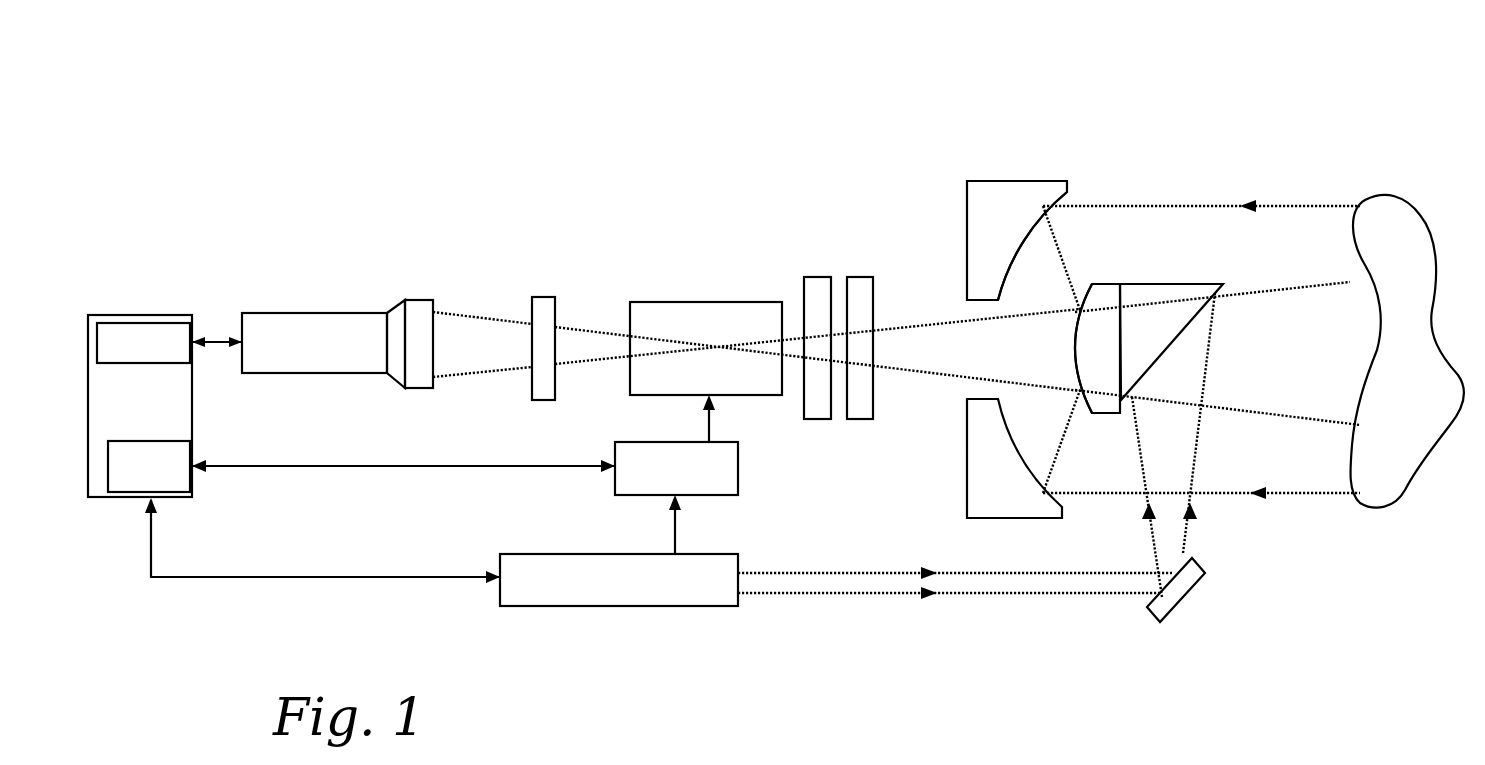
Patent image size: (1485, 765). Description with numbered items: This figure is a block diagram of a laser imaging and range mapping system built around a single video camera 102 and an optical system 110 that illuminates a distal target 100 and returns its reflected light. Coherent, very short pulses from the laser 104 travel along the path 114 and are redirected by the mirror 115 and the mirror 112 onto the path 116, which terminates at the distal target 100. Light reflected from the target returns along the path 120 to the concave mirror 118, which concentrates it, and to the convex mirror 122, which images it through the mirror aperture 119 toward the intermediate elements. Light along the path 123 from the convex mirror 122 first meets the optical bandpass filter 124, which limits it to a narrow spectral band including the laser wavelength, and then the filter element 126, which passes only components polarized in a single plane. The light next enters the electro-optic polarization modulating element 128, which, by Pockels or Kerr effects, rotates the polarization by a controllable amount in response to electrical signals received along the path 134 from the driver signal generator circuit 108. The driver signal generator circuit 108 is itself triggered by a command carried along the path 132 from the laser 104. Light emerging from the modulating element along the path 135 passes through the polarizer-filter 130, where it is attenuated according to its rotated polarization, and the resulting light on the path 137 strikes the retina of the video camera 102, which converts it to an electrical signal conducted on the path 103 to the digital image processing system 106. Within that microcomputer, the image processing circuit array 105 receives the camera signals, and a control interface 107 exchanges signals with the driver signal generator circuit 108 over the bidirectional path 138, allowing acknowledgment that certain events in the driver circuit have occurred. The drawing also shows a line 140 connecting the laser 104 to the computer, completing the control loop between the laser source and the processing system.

The distal target 100 is at (1386, 197).
The video camera 102 is at (307, 313).
The path 103 is at (215, 341).
The laser 104 is at (565, 606).
The image processing circuit array 105 is at (168, 363).
The digital image processing system 106 is at (165, 315).
The control interface 107 is at (130, 492).
The driver signal generator circuit 108 is at (703, 497).
The optical system 110 is at (1246, 96).
The mirror 112 is at (1153, 284).
The path 114 is at (880, 594).
The mirror 115 is at (1185, 598).
The path 116 is at (1250, 290).
The concave mirror 118 is at (1013, 181).
The mirror aperture 119 is at (1000, 302).
The path 120 is at (1160, 206).
The convex mirror 122 is at (1085, 413).
The path 123 is at (1000, 380).
The optical bandpass filter 124 is at (866, 277).
The filter element 126 is at (815, 277).
The electro-optic polarization modulating element 128 is at (726, 302).
The polarizer-filter 130 is at (540, 297).
The path 132 is at (675, 527).
The path 134 is at (706, 418).
The path 135 is at (590, 331).
The path 137 is at (457, 312).
The bidirectional path 138 is at (425, 466).
The trigger line 140 is at (315, 577).